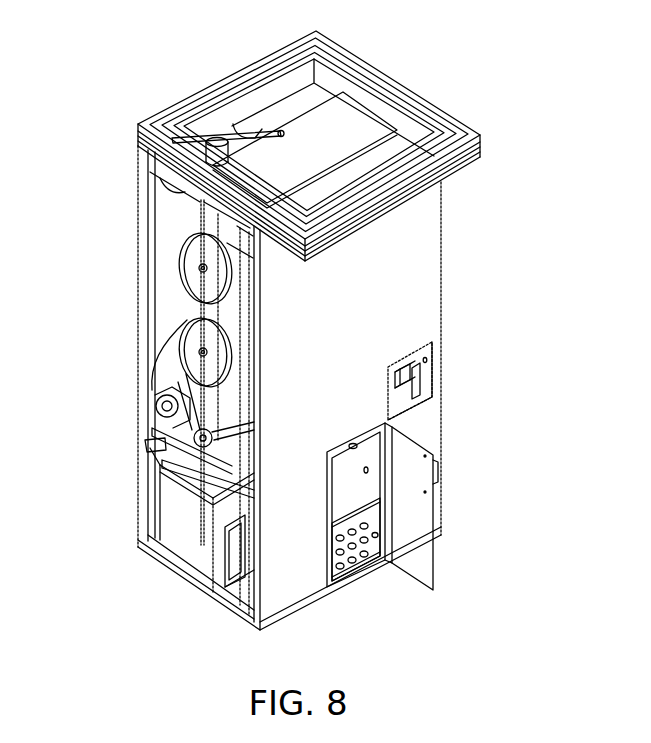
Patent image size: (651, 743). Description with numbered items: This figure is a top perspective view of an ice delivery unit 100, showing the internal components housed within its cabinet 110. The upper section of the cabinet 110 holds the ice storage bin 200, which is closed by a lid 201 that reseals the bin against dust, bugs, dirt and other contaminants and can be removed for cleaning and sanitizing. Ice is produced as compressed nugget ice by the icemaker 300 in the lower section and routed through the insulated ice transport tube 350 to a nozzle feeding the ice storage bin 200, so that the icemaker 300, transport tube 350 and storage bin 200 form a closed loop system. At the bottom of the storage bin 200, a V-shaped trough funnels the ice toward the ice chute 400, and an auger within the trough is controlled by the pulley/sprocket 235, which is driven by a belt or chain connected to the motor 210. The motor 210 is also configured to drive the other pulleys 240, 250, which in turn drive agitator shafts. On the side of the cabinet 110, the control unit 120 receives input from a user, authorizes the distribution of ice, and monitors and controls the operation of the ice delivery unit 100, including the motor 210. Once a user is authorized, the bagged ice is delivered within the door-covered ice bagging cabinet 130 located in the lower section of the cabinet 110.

The ice delivery unit 100 is at (532, 137).
The cabinet 110 is at (447, 226).
The control unit 120 is at (427, 377).
The ice bagging cabinet 130 is at (358, 517).
The ice storage bin 200 is at (190, 222).
The lid 201 is at (345, 126).
The motor 210 is at (200, 152).
The pulley/sprocket 235 is at (197, 434).
The pulley 240 is at (192, 340).
The pulley 250 is at (186, 256).
The icemaker 300 is at (185, 524).
The ice transport tube 350 is at (258, 127).
The ice chute 400 is at (355, 446).